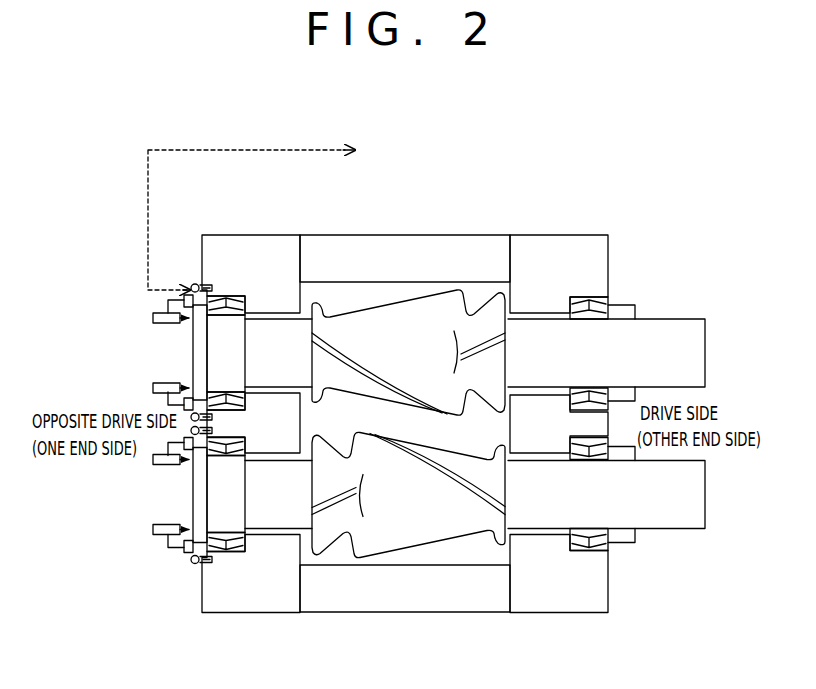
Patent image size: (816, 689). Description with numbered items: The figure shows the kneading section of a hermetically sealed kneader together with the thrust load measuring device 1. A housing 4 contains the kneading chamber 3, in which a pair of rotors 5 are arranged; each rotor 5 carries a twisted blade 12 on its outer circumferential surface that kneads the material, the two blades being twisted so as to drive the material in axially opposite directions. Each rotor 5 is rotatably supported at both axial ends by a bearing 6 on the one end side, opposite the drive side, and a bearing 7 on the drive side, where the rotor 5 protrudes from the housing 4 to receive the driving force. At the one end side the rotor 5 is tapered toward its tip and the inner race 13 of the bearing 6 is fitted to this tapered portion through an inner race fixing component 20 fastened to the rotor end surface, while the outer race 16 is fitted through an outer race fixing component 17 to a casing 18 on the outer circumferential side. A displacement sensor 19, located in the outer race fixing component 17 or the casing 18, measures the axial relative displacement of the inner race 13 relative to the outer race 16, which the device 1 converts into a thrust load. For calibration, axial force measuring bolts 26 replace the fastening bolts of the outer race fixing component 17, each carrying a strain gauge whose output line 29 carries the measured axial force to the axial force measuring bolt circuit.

The thrust load measuring device 1 is at (77, 274).
The kneading chamber 3 is at (477, 298).
The housing 4 is at (383, 236).
The rotor 5 is at (703, 353).
The bearing 6 is at (231, 284).
The bearing 7 is at (613, 297).
The blade 12 is at (438, 290).
The inner race 13 is at (227, 382).
The outer race 16 is at (247, 298).
The outer race fixing component 17 is at (188, 294).
The casing 18 is at (215, 248).
The displacement sensor 19 is at (158, 313).
The inner race fixing component 20 is at (192, 350).
The axial force measuring bolt 26 is at (190, 285).
The output line 29 is at (300, 148).